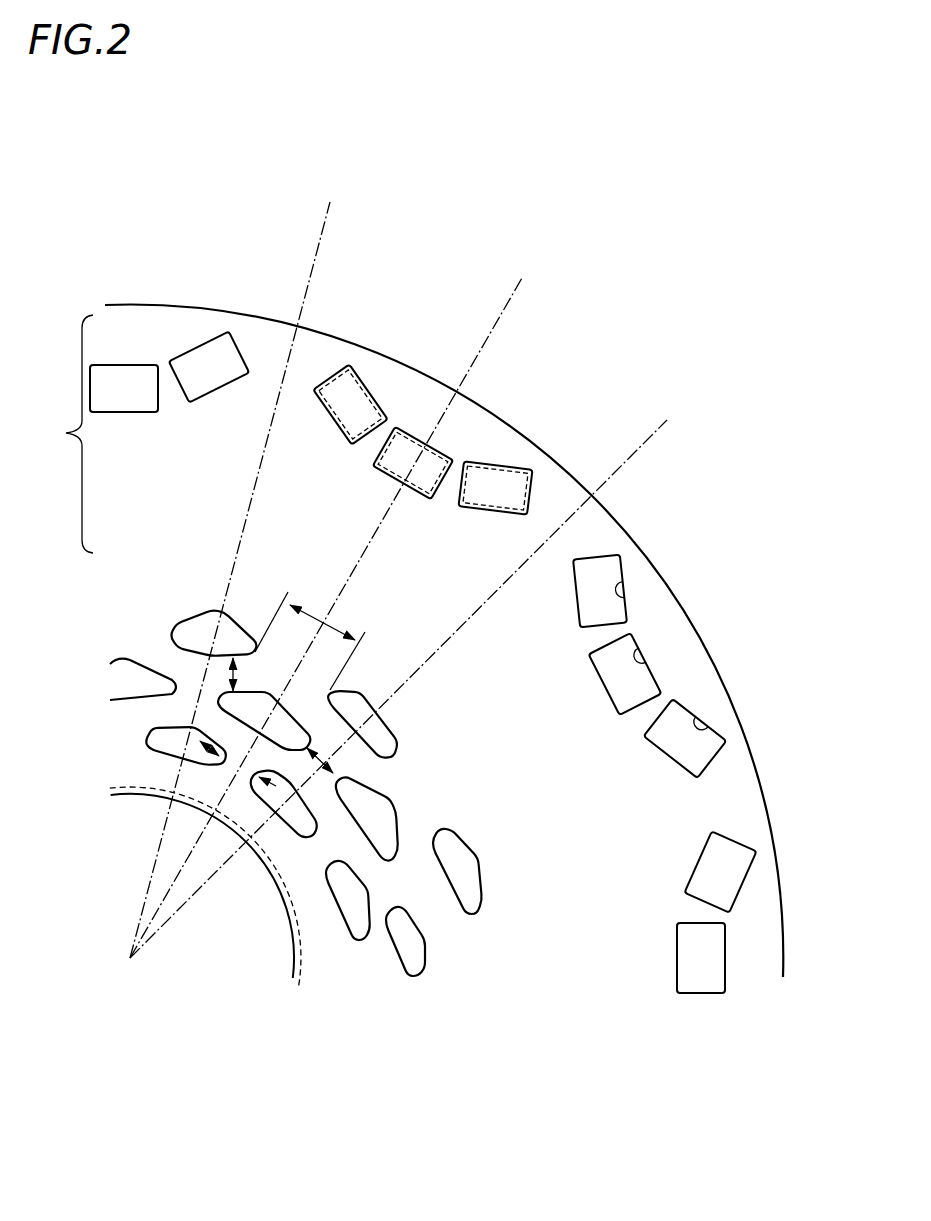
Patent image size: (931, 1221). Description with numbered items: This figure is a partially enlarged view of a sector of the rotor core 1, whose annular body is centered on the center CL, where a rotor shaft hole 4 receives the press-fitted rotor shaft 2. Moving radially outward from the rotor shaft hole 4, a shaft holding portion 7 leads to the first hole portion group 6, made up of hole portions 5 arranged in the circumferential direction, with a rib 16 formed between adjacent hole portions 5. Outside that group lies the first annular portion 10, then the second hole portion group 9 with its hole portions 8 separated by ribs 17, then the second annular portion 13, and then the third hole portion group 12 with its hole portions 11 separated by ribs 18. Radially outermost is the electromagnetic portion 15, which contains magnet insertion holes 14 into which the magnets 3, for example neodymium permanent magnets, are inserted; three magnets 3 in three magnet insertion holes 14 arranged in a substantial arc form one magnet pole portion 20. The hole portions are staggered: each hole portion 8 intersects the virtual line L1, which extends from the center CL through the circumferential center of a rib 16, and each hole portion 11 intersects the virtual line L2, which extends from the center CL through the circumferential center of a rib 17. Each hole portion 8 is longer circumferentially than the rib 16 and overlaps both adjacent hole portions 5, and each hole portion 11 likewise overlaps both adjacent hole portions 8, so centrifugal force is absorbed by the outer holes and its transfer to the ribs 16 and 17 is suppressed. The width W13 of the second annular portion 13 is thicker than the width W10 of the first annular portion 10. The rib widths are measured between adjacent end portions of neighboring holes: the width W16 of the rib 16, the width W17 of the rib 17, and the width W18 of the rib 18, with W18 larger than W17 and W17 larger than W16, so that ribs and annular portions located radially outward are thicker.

The rotor core 1 is at (580, 164).
The rotor shaft 2 is at (298, 978).
The magnet 3 is at (365, 378).
The rotor shaft hole 4 is at (128, 797).
The hole portion 5 is at (325, 900).
The first hole portion group 6 is at (139, 741).
The shaft holding portion 7 is at (156, 772).
The hole portion 8 is at (390, 800).
The second hole portion group 9 is at (117, 683).
The first annular portion 10 is at (146, 727).
The hole portion 11 is at (480, 857).
The third hole portion group 12 is at (194, 603).
The second annular portion 13 is at (164, 666).
The magnet insertion hole 14 is at (645, 660).
The electromagnetic portion 15 is at (142, 434).
The rib 16 is at (240, 768).
The rib 17 is at (353, 720).
The rib 18 is at (264, 654).
The magnet pole portion 20 is at (422, 402).
The width of first annular portion W10 is at (203, 740).
The width of second annular portion W13 is at (237, 675).
The width of rib 16 W16 is at (168, 810).
The width of rib 17 W17 is at (345, 760).
The width of rib 18 W18 is at (300, 606).
The virtual line L1 is at (336, 604).
The virtual line L2 is at (420, 565).
The center CL is at (127, 979).